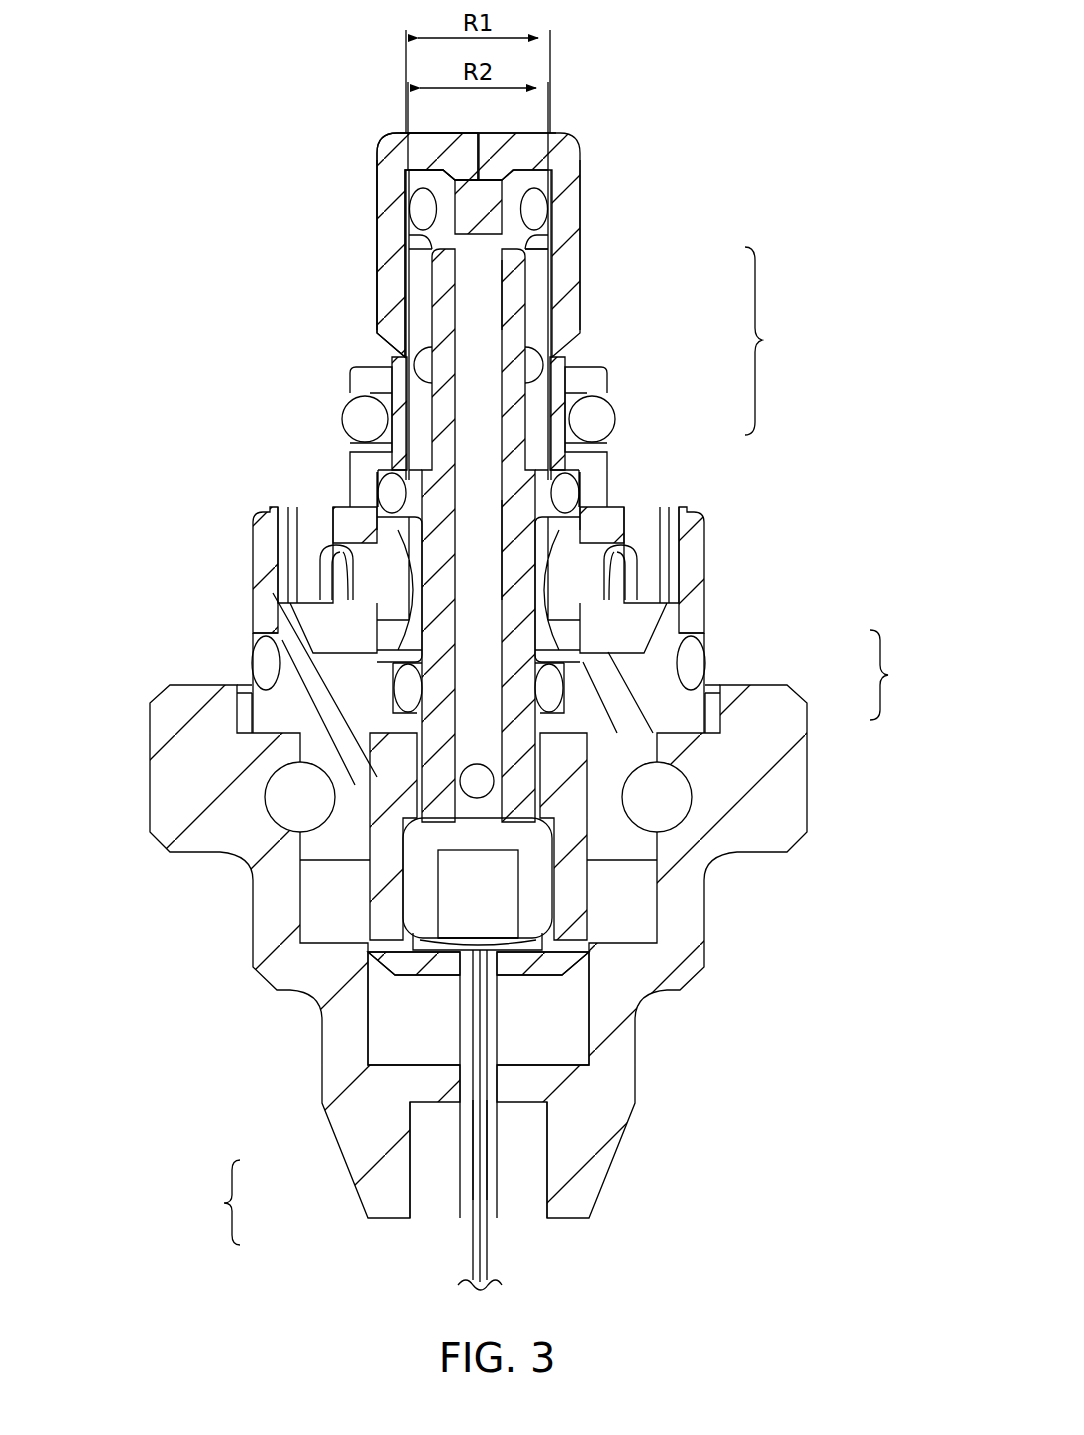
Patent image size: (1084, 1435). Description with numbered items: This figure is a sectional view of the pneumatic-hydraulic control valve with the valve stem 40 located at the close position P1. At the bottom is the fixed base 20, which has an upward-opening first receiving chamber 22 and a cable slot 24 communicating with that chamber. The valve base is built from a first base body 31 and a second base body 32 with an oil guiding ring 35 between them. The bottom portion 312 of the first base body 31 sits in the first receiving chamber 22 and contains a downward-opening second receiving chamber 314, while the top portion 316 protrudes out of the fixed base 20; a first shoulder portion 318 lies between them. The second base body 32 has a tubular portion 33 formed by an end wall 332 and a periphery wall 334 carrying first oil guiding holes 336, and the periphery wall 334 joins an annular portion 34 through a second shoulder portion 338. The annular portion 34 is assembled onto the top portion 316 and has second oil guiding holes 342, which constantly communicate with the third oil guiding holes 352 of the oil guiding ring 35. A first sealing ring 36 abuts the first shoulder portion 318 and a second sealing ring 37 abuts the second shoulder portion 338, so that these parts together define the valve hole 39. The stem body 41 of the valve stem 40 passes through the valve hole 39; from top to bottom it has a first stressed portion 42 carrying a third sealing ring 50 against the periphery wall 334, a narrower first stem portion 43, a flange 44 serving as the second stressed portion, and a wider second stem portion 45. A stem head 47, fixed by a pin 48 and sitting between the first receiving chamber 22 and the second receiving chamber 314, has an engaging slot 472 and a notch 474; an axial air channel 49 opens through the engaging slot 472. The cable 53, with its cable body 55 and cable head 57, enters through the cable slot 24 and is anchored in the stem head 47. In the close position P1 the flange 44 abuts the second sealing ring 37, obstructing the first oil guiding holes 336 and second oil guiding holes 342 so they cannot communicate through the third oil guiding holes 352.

The fixed base 20 is at (165, 810).
The first receiving chamber 22 is at (545, 1050).
The cable slot 24 is at (492, 1178).
The first base body 31 is at (895, 675).
The bottom portion 312 is at (635, 750).
The second receiving chamber 314 is at (350, 828).
The top portion 316 is at (692, 608).
The first shoulder portion 318 is at (413, 722).
The second base body 32 is at (263, 385).
The tubular portion 33 is at (227, 110).
The end wall 332 is at (392, 133).
The periphery wall 334 is at (393, 223).
The first oil guiding holes 336 is at (390, 358).
The second shoulder portion 338 is at (355, 470).
The annular portion 34 is at (273, 522).
The second oil guiding holes 342 is at (308, 550).
The oil guiding ring 35 is at (570, 592).
The third oil guiding holes 352 is at (405, 583).
The first sealing ring 36 is at (403, 688).
The second sealing ring 37 is at (385, 494).
The valve hole 39 is at (417, 292).
The valve stem 40 is at (395, 993).
The stem body 41 is at (770, 341).
The first stressed portion 42 is at (550, 240).
The first stem portion 43 is at (517, 303).
The flange 44 is at (538, 497).
The second stem portion 45 is at (512, 568).
The stem head 47 is at (385, 900).
The engaging slot 472 is at (535, 890).
The notch 474 is at (560, 966).
The pin 48 is at (480, 785).
The axial air channel 49 is at (560, 137).
The third sealing ring 50 is at (538, 210).
The cable 53 is at (214, 1202).
The cable body 55 is at (477, 1158).
The cable head 57 is at (460, 918).
The close position P1 is at (543, 978).